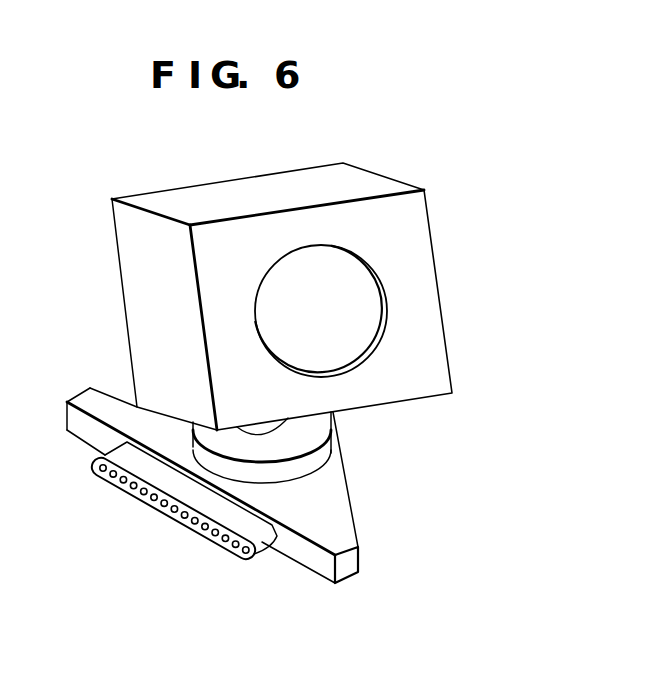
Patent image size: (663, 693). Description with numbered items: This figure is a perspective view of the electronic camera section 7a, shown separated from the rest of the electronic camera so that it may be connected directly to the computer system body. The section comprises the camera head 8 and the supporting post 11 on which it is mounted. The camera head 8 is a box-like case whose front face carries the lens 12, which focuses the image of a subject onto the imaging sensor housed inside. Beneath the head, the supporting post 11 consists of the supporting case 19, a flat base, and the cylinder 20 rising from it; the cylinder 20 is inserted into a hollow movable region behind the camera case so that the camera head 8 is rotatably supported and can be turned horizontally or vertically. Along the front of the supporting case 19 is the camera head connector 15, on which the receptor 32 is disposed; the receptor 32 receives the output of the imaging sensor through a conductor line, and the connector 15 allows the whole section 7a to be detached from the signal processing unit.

The electronic camera section 7a is at (315, 283).
The camera head 8 is at (425, 362).
The lens 12 is at (357, 308).
The cylinder 20 is at (272, 427).
The supporting post 11 is at (297, 470).
The supporting case 19 is at (338, 530).
The camera head connector 15 is at (323, 570).
The receptor 32 is at (137, 483).